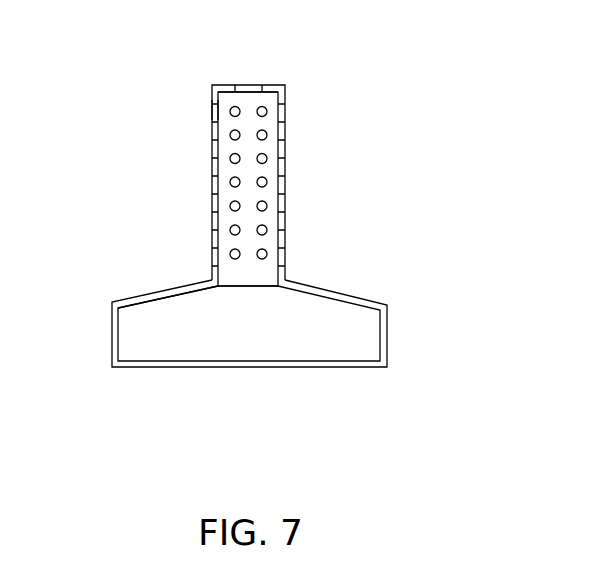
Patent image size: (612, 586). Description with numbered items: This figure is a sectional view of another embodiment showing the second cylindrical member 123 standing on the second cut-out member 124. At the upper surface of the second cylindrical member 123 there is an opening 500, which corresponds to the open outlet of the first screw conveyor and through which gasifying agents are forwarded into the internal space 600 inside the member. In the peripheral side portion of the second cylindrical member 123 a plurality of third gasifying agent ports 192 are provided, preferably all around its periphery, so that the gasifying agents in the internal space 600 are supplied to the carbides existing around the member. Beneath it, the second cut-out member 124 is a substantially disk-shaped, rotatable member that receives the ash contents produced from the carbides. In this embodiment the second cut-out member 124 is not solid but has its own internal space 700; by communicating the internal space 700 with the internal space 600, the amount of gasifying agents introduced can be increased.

The second cylindrical member 123 is at (285, 147).
The second cut-out member 124 is at (385, 303).
The third gasifying agent ports 192 is at (212, 112).
The opening 500 is at (247, 84).
The internal space 600 is at (227, 167).
The internal space 700 is at (163, 310).